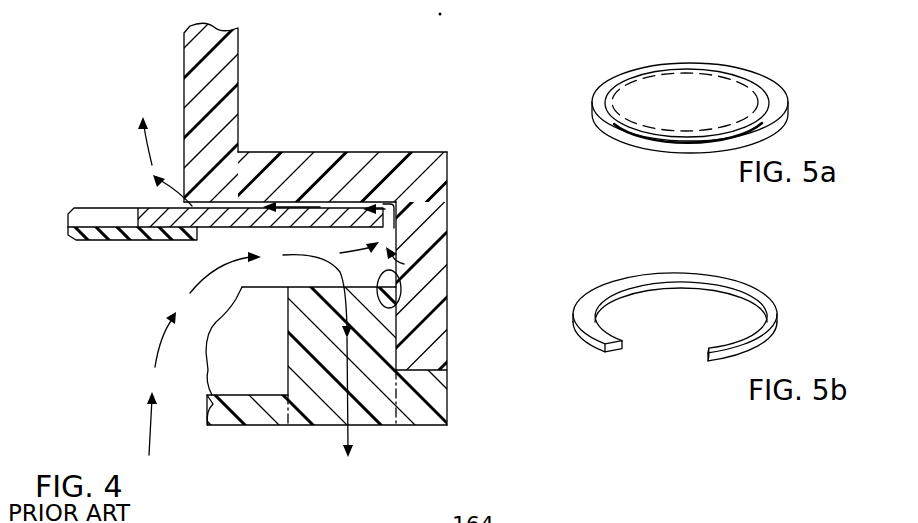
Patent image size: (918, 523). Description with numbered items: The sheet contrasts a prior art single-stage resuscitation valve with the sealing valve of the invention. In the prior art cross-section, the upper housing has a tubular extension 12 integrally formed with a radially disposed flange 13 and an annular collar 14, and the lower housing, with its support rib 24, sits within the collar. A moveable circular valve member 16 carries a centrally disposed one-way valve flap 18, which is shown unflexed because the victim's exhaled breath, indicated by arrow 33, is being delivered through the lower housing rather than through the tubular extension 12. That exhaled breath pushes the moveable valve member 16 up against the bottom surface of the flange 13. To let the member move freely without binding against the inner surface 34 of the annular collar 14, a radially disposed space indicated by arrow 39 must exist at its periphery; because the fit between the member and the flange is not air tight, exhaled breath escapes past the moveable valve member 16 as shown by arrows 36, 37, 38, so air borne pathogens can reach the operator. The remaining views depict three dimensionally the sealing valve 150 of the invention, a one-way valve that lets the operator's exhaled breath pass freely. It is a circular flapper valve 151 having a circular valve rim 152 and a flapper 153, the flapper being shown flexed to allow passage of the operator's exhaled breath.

In FIG. 4, the tubular extension 12 is at (238, 70).
In FIG. 4, the radially disposed flange 13 is at (258, 152).
In FIG. 4, the annular collar 14 is at (448, 273).
In FIG. 4, the moveable circular valve member 16 is at (148, 208).
In FIG. 4, the one-way valve flap 18 is at (110, 243).
In FIG. 4, the lower housing support rib 24 is at (373, 333).
In FIG. 4, the arrow indicating victim's exhaled breath 33 is at (158, 337).
In FIG. 4, the inner surface of annular flange 34 is at (401, 306).
In FIG. 4, the arrow indicating exhaled breath leakage 36 is at (137, 149).
In FIG. 4, the arrow indicating exhaled breath leakage 37 is at (298, 207).
In FIG. 4, the arrow indicating exhaled breath leakage 38 is at (404, 200).
In FIG. 4, the arrow indicating radially disposed space 39 is at (404, 264).
In FIG. 5a, the sealing valve 150 is at (738, 45).
In FIG. 5a, the circular flapper valve 151 is at (642, 62).
In FIG. 5a, the circular valve rim 152 is at (600, 98).
In FIG. 5b, the circular valve rim 152 is at (582, 312).
In FIG. 5a, the flapper 153 is at (700, 116).
In FIG. 5b, the flapper 153 is at (655, 328).